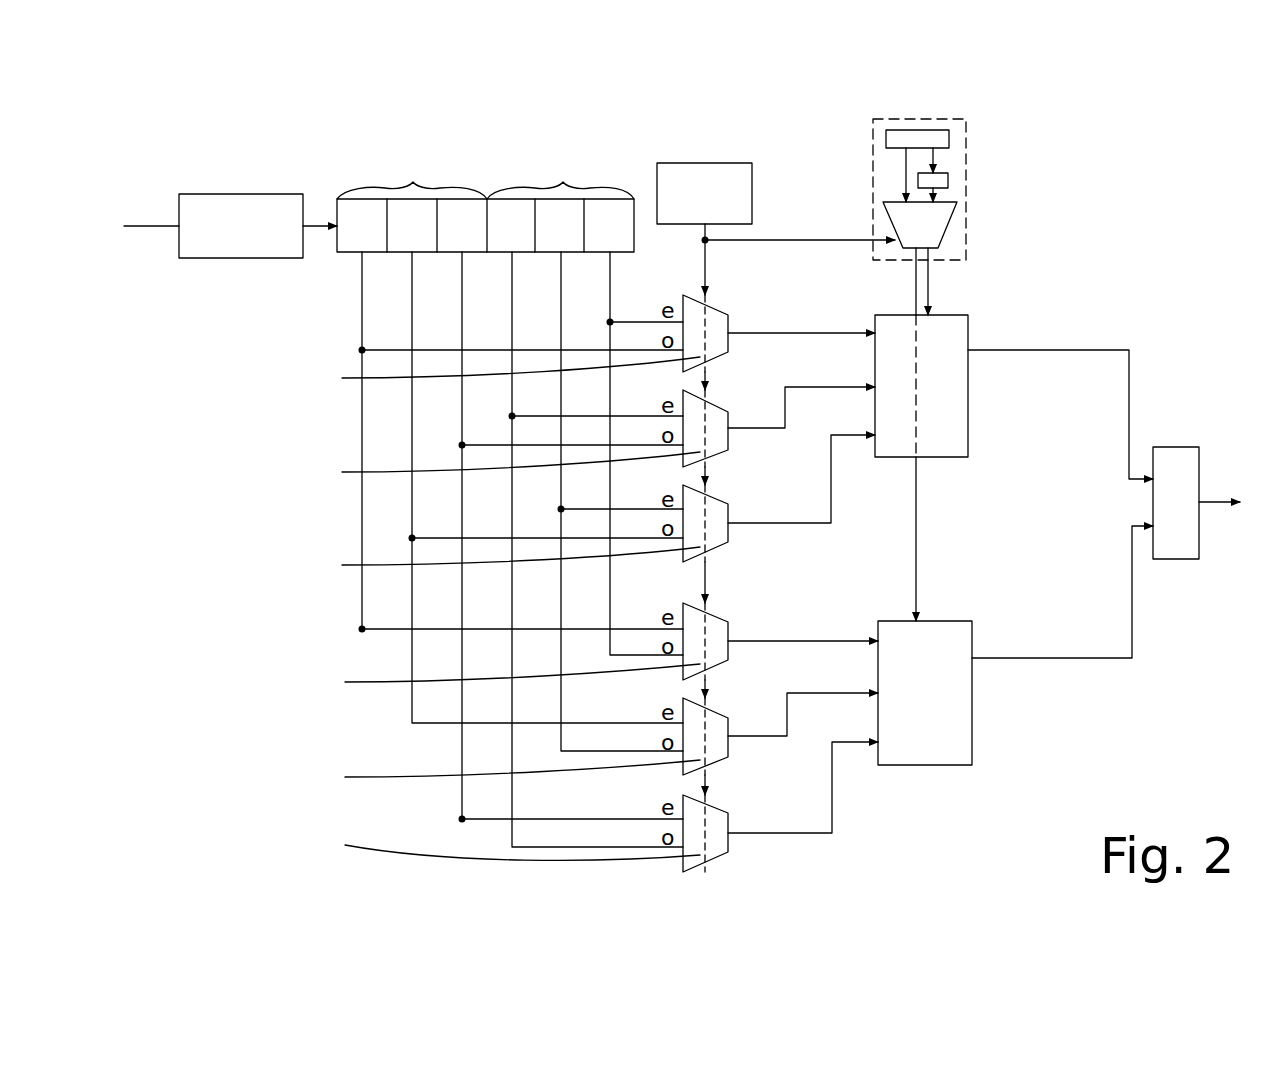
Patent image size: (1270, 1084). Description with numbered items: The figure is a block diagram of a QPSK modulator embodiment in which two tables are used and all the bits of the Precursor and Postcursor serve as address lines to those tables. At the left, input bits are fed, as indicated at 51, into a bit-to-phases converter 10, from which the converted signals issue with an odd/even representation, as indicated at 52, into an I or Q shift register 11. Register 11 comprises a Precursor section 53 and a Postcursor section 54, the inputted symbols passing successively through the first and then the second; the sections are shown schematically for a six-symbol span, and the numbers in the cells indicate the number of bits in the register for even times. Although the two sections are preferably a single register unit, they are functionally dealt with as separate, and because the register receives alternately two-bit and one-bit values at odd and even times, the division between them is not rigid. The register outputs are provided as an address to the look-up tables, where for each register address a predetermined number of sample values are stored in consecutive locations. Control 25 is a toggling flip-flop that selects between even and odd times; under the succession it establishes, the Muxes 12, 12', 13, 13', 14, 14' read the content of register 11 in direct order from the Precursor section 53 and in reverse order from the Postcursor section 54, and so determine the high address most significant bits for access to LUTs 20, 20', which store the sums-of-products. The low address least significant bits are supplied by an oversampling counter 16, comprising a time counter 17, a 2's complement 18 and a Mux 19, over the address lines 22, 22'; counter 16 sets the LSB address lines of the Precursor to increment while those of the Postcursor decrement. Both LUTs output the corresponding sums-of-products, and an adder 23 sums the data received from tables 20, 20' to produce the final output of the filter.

The bit-to-phases converter 10 is at (223, 207).
The I or Q shift register 11 is at (505, 184).
The Mux 12 is at (502, 375).
The Mux 12' is at (502, 681).
The Mux 13 is at (502, 470).
The Mux 13' is at (502, 776).
The Mux 14 is at (502, 564).
The Mux 14' is at (502, 844).
The oversampling counter 16 is at (958, 173).
The time counter 17 is at (918, 140).
The 2's complement 18 is at (939, 178).
The Mux 19 is at (930, 222).
The LUT 20 is at (1014, 397).
The LUT 20' is at (1015, 670).
The address line 22 is at (991, 274).
The address line 22' is at (973, 434).
The adder 23 is at (1166, 456).
The control 25 is at (715, 180).
The bit input 51 is at (135, 224).
The converted signal output 52 is at (318, 222).
The Precursor section 53 is at (413, 182).
The Postcursor section 54 is at (563, 182).